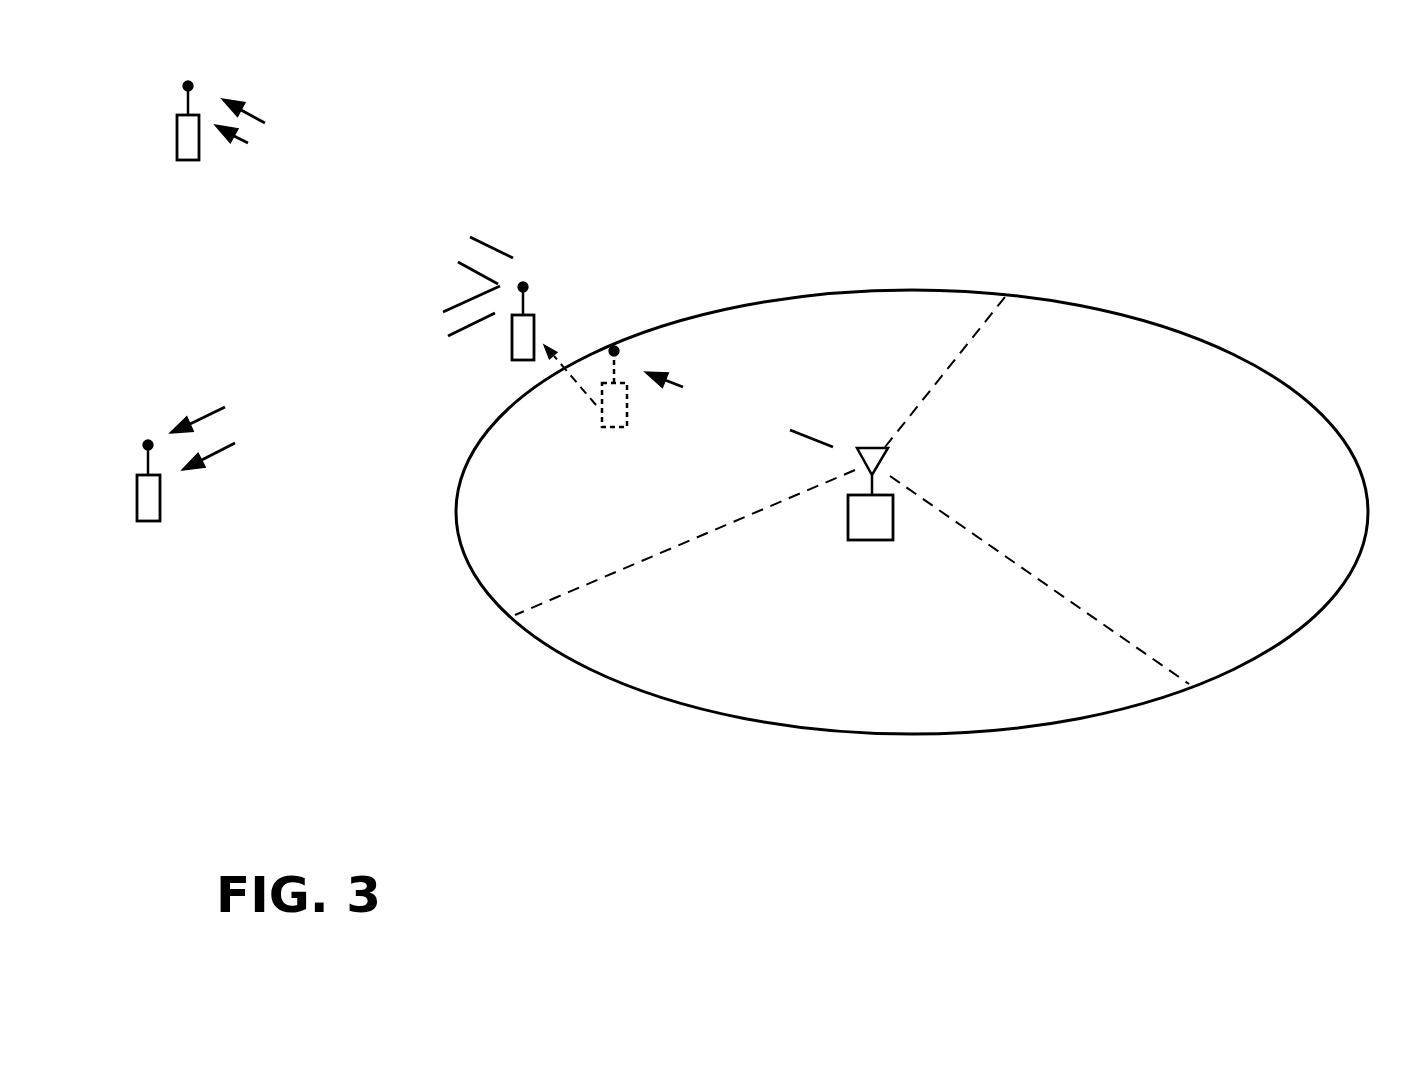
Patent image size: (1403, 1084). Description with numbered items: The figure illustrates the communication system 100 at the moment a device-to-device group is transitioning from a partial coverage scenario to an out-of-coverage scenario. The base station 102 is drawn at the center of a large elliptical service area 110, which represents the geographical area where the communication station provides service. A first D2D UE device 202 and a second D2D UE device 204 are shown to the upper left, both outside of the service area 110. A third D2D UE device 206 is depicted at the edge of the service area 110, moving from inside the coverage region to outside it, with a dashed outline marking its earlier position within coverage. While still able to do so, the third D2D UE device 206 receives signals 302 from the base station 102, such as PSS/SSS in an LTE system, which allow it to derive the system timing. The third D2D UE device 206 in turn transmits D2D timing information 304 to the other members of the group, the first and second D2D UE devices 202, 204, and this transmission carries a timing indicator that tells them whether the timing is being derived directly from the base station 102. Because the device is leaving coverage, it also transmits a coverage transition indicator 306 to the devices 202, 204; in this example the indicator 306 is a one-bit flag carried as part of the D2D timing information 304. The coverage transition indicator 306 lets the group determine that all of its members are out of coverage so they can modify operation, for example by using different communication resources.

The communication system 100 is at (843, 819).
The base station 102 is at (886, 540).
The service area 110 is at (1115, 308).
The first D2D UE device 202 is at (194, 161).
The second D2D UE device 204 is at (160, 497).
The third D2D UE device 206 is at (534, 333).
The signals 302 is at (807, 436).
The D2D timing information 304 is at (492, 240).
The coverage transition indicator 306 is at (473, 272).